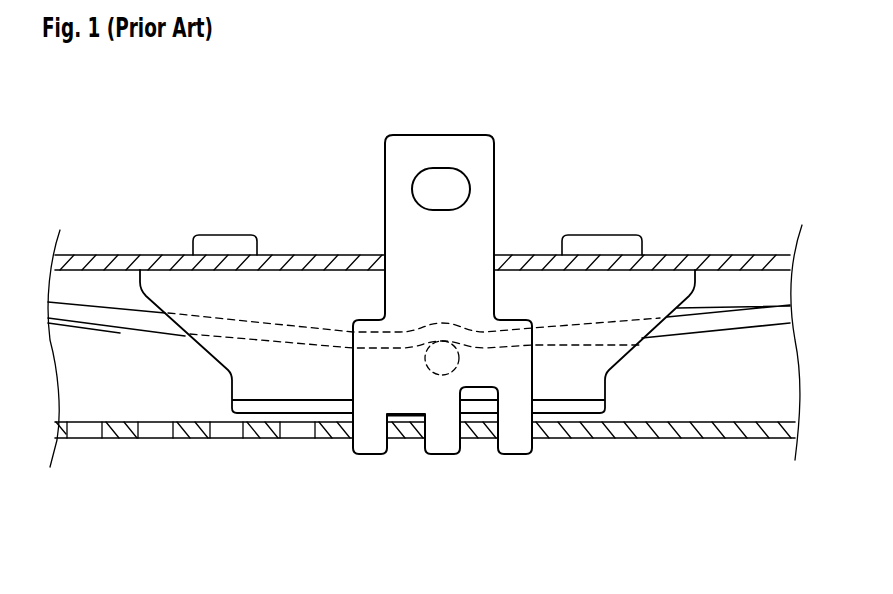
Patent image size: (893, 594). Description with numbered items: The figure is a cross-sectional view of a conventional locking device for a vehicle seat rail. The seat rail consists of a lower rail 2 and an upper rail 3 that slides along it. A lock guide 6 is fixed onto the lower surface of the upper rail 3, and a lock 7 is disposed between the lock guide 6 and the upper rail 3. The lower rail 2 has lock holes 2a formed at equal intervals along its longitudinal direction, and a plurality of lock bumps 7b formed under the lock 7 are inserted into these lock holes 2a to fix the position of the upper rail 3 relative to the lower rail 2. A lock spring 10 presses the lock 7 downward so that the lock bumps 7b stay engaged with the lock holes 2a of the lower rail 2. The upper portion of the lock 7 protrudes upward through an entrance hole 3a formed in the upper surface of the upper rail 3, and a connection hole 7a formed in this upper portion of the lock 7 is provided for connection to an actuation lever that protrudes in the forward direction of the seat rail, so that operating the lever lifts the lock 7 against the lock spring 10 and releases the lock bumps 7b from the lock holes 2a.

The lower rail 2 is at (192, 440).
The lock holes 2a is at (228, 430).
The upper rail 3 is at (118, 262).
The entrance hole 3a is at (500, 262).
The lock guide 6 is at (610, 353).
The lock 7 is at (487, 150).
The connection hole 7a is at (443, 183).
The lock bumps 7b is at (443, 435).
The lock spring 10 is at (75, 312).